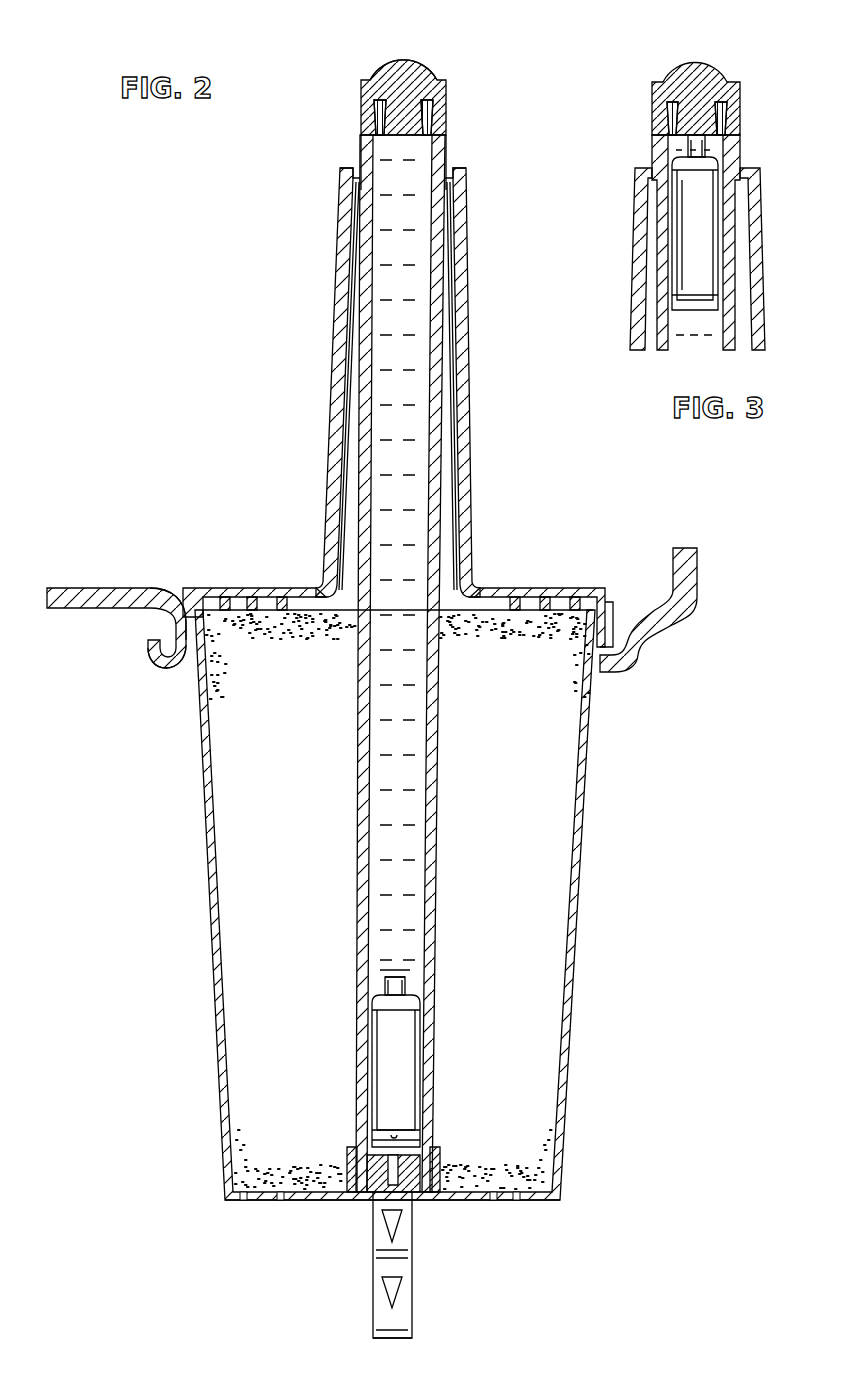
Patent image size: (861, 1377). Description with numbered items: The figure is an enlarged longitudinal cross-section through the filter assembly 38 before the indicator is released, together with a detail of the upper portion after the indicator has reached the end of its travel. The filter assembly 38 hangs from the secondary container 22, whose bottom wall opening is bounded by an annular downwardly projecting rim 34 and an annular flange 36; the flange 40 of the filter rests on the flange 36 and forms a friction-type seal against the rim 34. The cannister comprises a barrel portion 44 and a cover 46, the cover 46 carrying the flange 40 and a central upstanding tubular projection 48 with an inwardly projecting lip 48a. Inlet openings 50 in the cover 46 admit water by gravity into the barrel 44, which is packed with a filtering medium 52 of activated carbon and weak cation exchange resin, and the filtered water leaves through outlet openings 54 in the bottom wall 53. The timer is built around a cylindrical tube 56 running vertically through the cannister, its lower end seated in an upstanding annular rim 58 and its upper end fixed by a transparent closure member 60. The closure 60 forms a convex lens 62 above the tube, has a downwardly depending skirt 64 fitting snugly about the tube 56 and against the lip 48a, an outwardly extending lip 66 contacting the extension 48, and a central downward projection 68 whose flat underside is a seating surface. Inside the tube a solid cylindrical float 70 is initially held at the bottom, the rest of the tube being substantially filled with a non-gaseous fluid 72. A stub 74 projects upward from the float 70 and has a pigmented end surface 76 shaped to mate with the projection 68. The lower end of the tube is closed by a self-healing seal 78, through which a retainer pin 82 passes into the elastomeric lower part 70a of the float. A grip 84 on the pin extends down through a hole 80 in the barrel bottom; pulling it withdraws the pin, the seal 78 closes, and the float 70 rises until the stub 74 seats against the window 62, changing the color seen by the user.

In FIG. 2, the secondary container 22 is at (690, 556).
In FIG. 2, the annular downwardly projecting rim 34 is at (170, 626).
In FIG. 2, the annular flange 36 is at (198, 668).
In FIG. 2, the filter assembly 38 is at (178, 868).
In FIG. 2, the flange 40 is at (612, 632).
In FIG. 2, the barrel portion 44 is at (587, 812).
In FIG. 2, the cover 46 is at (292, 600).
In FIG. 2, the tubular projection 48 is at (463, 290).
In FIG. 3, the tubular projection 48 is at (758, 290).
In FIG. 2, the inwardly projecting lip 48a is at (452, 180).
In FIG. 2, the inlet openings 50 is at (228, 603).
In FIG. 2, the filtering medium 52 is at (522, 1185).
In FIG. 2, the bottom wall 53 is at (320, 1200).
In FIG. 2, the outlet openings 54 is at (243, 1200).
In FIG. 2, the cylindrical tube 56 is at (437, 728).
In FIG. 3, the cylindrical tube 56 is at (736, 246).
In FIG. 2, the upstanding annular rim 58 is at (438, 1160).
In FIG. 2, the transparent closure member 60 is at (443, 78).
In FIG. 2, the lens 62 is at (398, 62).
In FIG. 3, the lens 62 is at (700, 65).
In FIG. 2, the annular downwardly depending skirt 64 is at (441, 130).
In FIG. 2, the outwardly extending lip 66 is at (356, 186).
In FIG. 2, the central downward projection 68 is at (376, 124).
In FIG. 3, the central downward projection 68 is at (668, 120).
In FIG. 2, the float 70 is at (400, 1056).
In FIG. 3, the float 70 is at (705, 210).
In FIG. 2, the elastomeric lower part 70a is at (410, 1138).
In FIG. 2, the non-gaseous fluid 72 is at (415, 812).
In FIG. 2, the stub 74 is at (408, 988).
In FIG. 3, the stub 74 is at (708, 150).
In FIG. 2, the end surface 76 is at (385, 978).
In FIG. 2, the self-healing seal 78 is at (422, 1195).
In FIG. 2, the hole 80 is at (380, 1205).
In FIG. 2, the retainer pin 82 is at (347, 1160).
In FIG. 2, the grip 84 is at (410, 1330).